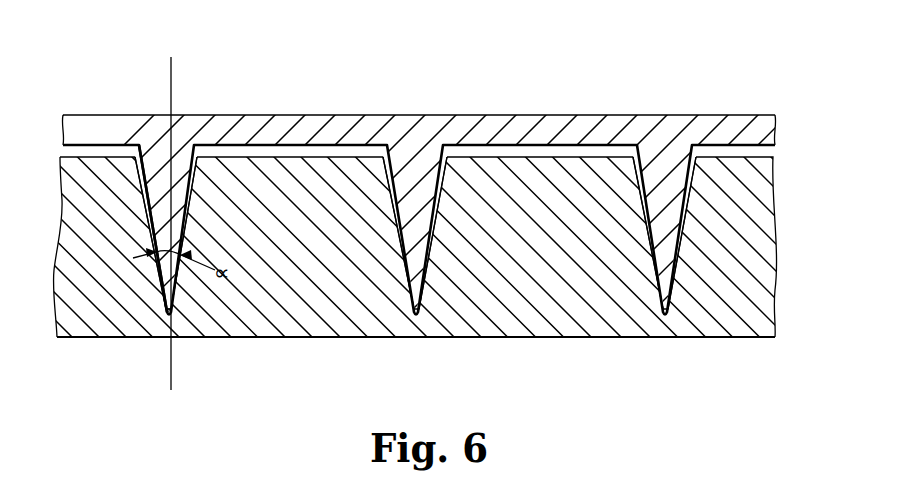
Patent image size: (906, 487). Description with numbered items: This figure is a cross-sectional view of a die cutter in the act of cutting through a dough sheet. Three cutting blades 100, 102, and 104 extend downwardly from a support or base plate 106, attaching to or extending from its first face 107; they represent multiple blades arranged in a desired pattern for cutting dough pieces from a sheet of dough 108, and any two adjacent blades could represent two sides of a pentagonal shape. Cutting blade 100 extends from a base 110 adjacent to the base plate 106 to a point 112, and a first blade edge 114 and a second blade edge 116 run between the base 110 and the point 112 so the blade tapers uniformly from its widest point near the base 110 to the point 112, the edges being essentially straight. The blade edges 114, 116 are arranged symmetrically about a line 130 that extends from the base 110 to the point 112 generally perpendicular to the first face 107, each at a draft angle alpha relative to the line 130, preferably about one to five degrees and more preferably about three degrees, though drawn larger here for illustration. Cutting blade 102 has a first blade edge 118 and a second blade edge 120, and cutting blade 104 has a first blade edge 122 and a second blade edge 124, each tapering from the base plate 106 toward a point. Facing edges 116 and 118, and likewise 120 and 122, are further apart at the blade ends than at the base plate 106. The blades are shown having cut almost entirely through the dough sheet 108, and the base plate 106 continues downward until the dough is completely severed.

The cutting blade 100 is at (164, 187).
The cutting blade 102 is at (413, 163).
The cutting blade 104 is at (663, 188).
The base plate 106 is at (249, 139).
The first face 107 is at (315, 147).
The sheet of dough 108 is at (712, 308).
The base 110 is at (150, 150).
The point 112 is at (164, 317).
The first blade edge 114 is at (147, 237).
The second blade edge 116 is at (197, 230).
The first blade edge 118 is at (403, 227).
The second blade edge 120 is at (430, 242).
The first blade edge 122 is at (650, 232).
The second blade edge 124 is at (687, 220).
The line 130 is at (172, 64).